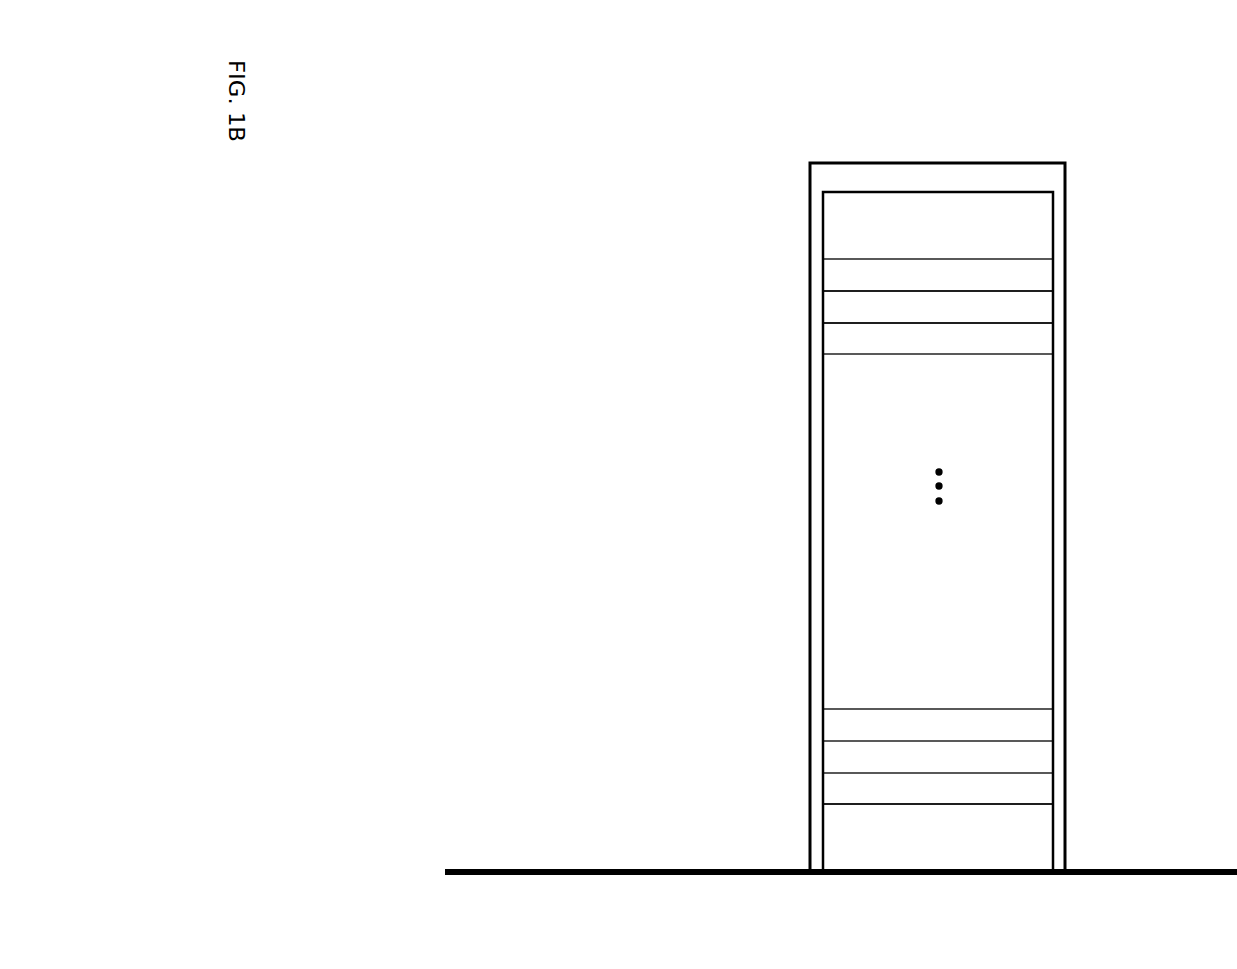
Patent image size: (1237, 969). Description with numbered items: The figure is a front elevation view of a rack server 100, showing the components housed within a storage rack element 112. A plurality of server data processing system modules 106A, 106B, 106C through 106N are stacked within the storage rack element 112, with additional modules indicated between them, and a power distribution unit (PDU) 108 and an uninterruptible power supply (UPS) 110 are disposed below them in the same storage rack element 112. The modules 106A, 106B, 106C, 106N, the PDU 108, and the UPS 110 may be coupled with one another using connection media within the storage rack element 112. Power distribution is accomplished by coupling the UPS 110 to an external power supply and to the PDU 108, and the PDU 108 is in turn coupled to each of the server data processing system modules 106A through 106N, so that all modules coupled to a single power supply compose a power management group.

The computer system / server rack system 100 is at (535, 172).
The server data processing system module 106A is at (822, 270).
The server data processing system module 106B is at (822, 305).
The server data processing system module 106C is at (822, 337).
The server data processing system module 106N is at (822, 722).
The power distribution unit (PDU) 108 is at (1053, 787).
The uninterruptible power supply (UPS) 110 is at (1053, 833).
The storage rack element 112 is at (1020, 163).